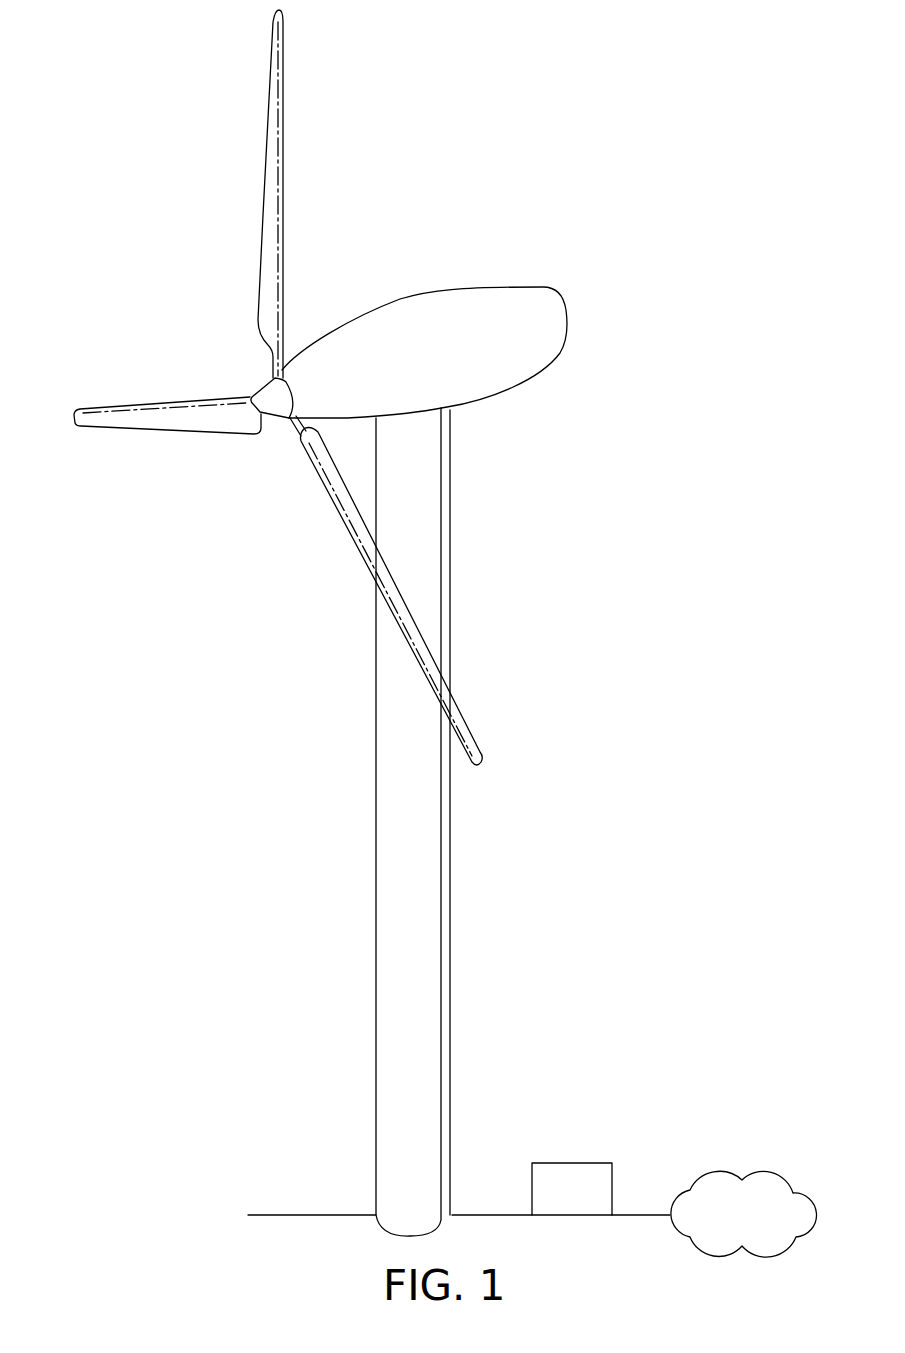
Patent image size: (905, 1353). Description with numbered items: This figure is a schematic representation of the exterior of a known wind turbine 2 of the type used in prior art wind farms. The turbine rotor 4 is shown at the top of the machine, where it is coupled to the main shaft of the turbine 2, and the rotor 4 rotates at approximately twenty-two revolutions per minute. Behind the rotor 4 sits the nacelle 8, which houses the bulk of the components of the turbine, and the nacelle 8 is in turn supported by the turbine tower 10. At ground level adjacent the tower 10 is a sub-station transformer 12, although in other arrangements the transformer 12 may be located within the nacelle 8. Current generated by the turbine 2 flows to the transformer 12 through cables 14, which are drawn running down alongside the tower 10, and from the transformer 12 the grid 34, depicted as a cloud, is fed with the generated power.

The wind turbine 2 is at (258, 1058).
The turbine rotor 4 is at (264, 200).
The nacelle 8 is at (490, 292).
The turbine tower 10 is at (392, 802).
The sub-station transformer 12 is at (592, 1163).
The cables 14 is at (443, 896).
The grid 34 is at (776, 1172).